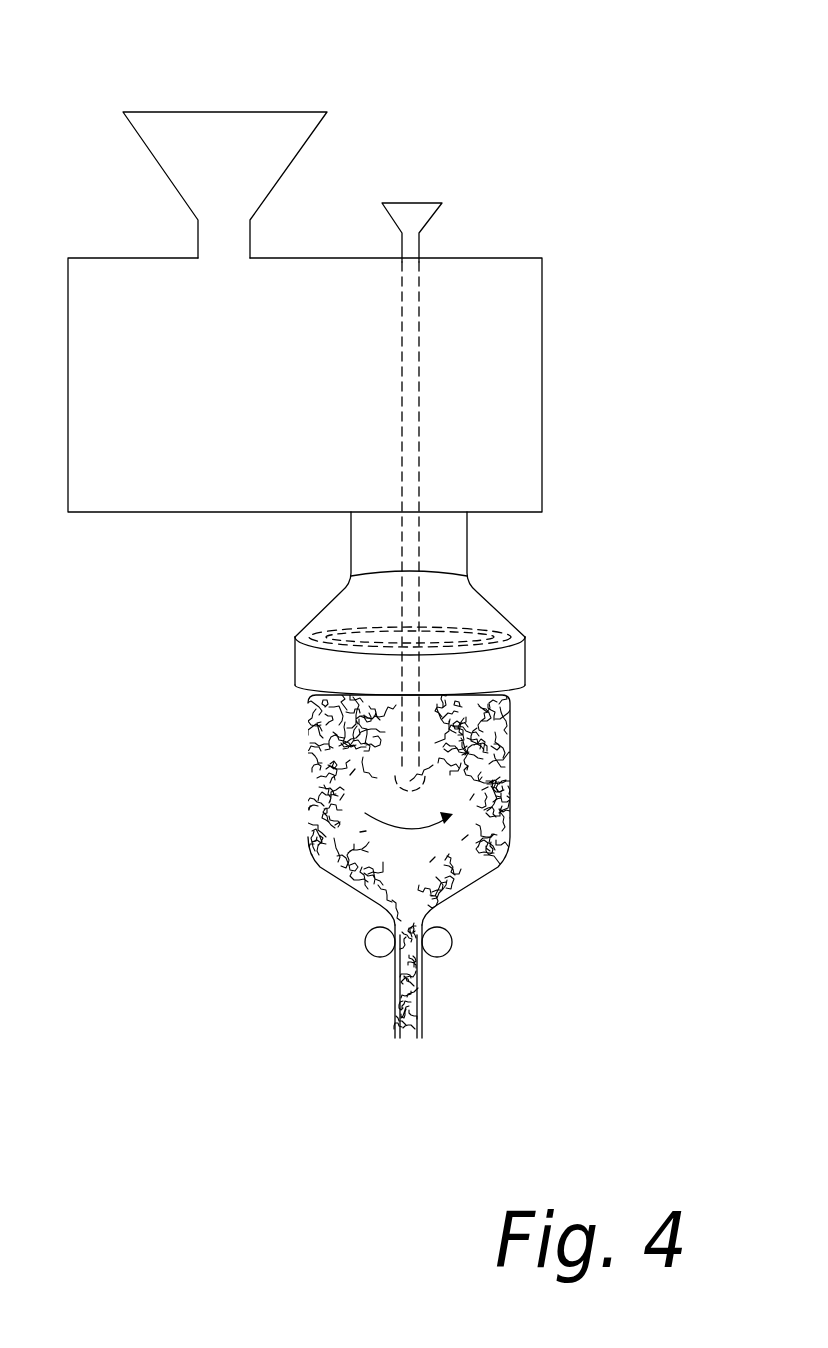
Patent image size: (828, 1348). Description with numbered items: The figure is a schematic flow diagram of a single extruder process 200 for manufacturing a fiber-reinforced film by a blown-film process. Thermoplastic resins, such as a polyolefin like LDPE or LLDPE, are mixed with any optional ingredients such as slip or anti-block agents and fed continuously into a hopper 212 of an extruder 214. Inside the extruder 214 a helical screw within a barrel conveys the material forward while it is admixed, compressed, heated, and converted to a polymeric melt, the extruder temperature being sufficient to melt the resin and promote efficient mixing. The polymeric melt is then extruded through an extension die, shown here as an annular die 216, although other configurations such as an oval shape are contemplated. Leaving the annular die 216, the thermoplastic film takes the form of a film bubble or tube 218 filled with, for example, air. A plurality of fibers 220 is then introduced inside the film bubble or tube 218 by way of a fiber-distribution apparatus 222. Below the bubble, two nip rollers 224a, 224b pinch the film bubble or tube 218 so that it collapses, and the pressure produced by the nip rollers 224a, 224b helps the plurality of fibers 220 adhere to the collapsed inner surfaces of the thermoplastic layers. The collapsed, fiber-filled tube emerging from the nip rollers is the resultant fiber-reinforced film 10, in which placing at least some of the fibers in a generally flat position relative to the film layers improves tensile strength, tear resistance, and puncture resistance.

The single extruder process 200 is at (606, 178).
The hopper 212 is at (162, 112).
The extruder 214 is at (171, 512).
The annular die 216 is at (525, 664).
The film bubble or tube 218 is at (510, 815).
The plurality of fibers 220 is at (303, 714).
The fiber-distribution apparatus 222 is at (417, 758).
The nip roller 224a is at (452, 942).
The nip roller 224b is at (365, 942).
The fiber-reinforced film 10 is at (444, 1010).